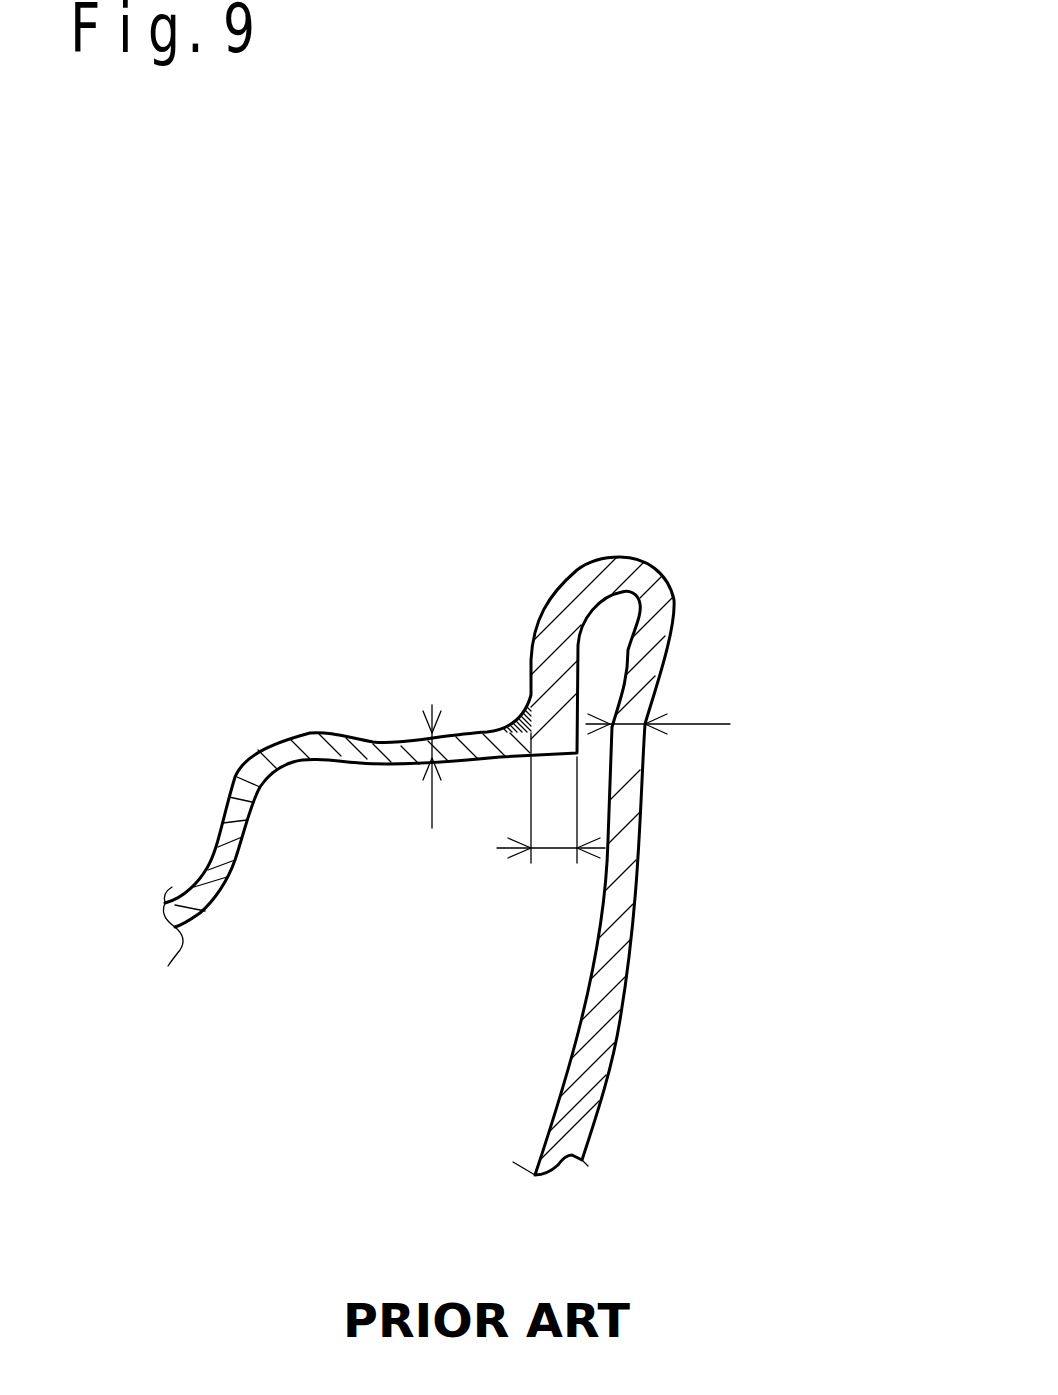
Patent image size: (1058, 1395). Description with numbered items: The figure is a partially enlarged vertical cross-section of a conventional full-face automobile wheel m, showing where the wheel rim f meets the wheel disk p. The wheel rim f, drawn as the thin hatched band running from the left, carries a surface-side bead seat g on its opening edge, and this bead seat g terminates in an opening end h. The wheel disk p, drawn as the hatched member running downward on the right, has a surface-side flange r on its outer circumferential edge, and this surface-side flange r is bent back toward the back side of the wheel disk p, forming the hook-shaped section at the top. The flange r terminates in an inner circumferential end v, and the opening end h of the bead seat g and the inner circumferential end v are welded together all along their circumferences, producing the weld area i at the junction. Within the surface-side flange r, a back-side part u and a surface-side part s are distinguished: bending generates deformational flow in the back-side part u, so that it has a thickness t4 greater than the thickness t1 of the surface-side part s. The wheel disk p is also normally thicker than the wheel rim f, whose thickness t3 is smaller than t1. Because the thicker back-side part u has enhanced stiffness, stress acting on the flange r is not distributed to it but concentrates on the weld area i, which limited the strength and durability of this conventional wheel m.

The full-face automobile wheel m is at (277, 522).
The wheel rim f is at (245, 763).
The surface-side bead seat g is at (385, 745).
The weld area i is at (513, 720).
The back-side part u is at (550, 690).
The surface-side flange r is at (639, 585).
The surface-side part s is at (636, 688).
The inner circumferential end v is at (577, 740).
The opening end h is at (522, 743).
The wheel disk p is at (600, 1038).
The thickness of the surface-side part t1 is at (658, 711).
The thickness of the wheel rim t3 is at (417, 766).
The thickness of the back-side part t4 is at (551, 810).